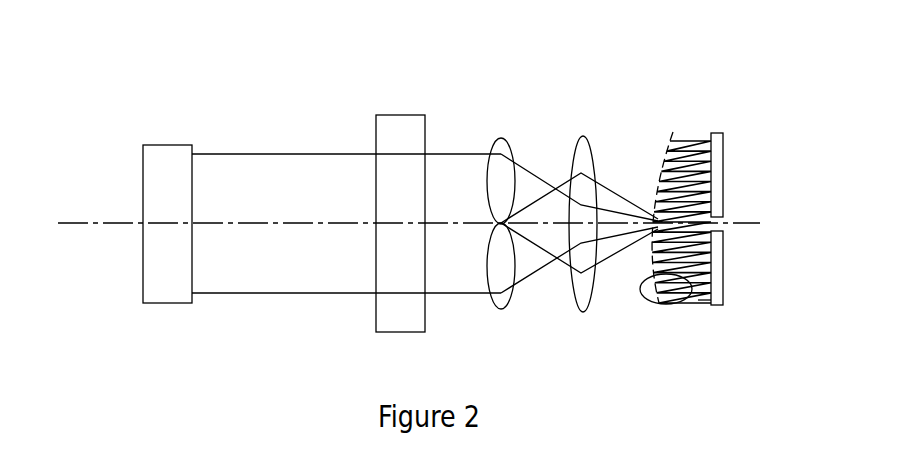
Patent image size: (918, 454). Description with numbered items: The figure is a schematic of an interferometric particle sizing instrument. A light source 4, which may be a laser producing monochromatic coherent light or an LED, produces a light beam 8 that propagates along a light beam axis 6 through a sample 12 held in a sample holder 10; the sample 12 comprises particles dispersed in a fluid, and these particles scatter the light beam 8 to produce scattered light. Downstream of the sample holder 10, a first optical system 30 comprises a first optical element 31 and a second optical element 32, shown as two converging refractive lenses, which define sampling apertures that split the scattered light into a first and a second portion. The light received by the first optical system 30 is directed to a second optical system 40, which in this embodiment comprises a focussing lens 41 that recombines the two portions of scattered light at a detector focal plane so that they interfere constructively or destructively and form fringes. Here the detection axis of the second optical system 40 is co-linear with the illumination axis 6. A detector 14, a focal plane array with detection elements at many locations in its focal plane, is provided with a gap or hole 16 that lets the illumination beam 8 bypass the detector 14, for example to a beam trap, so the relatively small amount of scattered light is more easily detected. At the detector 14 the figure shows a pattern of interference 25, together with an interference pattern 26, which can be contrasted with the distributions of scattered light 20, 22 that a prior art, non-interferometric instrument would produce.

The light source 4 is at (172, 145).
The light beam axis 6 is at (127, 223).
The light beam 8 is at (286, 199).
The sample holder 10 is at (355, 201).
The sample 12 is at (400, 223).
The detector 14 is at (724, 167).
The gap or hole 16 is at (727, 227).
The distribution of scattered light 20 is at (660, 148).
The distribution of scattered light 22 is at (675, 135).
The pattern of interference 25 is at (698, 300).
The interference pattern 26 is at (653, 304).
The first optical system 30 is at (520, 201).
The first optical element 31 is at (513, 147).
The second optical element 32 is at (512, 302).
The second optical system 40 is at (587, 200).
The focussing lens 41 is at (592, 300).